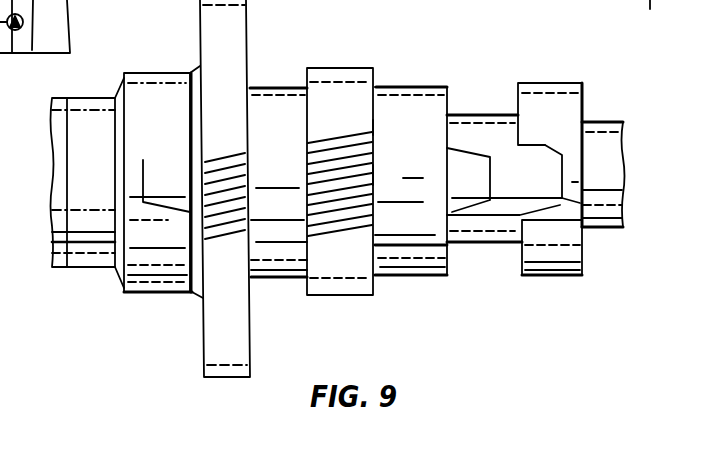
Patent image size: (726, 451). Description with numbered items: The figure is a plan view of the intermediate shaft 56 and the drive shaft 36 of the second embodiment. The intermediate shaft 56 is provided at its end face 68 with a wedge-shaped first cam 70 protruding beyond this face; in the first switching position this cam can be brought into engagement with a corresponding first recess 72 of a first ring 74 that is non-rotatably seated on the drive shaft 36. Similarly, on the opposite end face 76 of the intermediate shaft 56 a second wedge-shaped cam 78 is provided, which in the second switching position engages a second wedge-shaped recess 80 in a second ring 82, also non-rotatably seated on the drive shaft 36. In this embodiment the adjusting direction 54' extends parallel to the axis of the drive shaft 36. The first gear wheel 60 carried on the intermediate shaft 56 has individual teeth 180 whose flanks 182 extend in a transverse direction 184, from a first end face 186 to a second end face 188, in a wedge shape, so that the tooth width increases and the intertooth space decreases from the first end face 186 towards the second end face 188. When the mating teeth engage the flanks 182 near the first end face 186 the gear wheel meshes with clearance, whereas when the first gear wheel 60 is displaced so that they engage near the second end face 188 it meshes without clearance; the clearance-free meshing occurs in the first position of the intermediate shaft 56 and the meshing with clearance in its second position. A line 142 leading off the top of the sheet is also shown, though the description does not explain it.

The drive shaft 36 is at (605, 231).
The adjusting direction 54' is at (273, 188).
The intermediate shaft 56 is at (422, 265).
The first gear wheel 60 is at (373, 78).
The end face 68 is at (188, 115).
The first cam 70 is at (157, 298).
The first recess 72 is at (148, 161).
The first ring 74 is at (135, 296).
The end face 76 is at (448, 97).
The second cam 78 is at (473, 206).
The second recess 80 is at (540, 148).
The second ring 82 is at (562, 278).
The pump line 142 is at (652, 19).
The teeth 180 is at (368, 128).
The flanks 182 is at (329, 134).
The transverse direction 184 is at (321, 255).
The first end face 186 is at (307, 293).
The second end face 188 is at (378, 173).